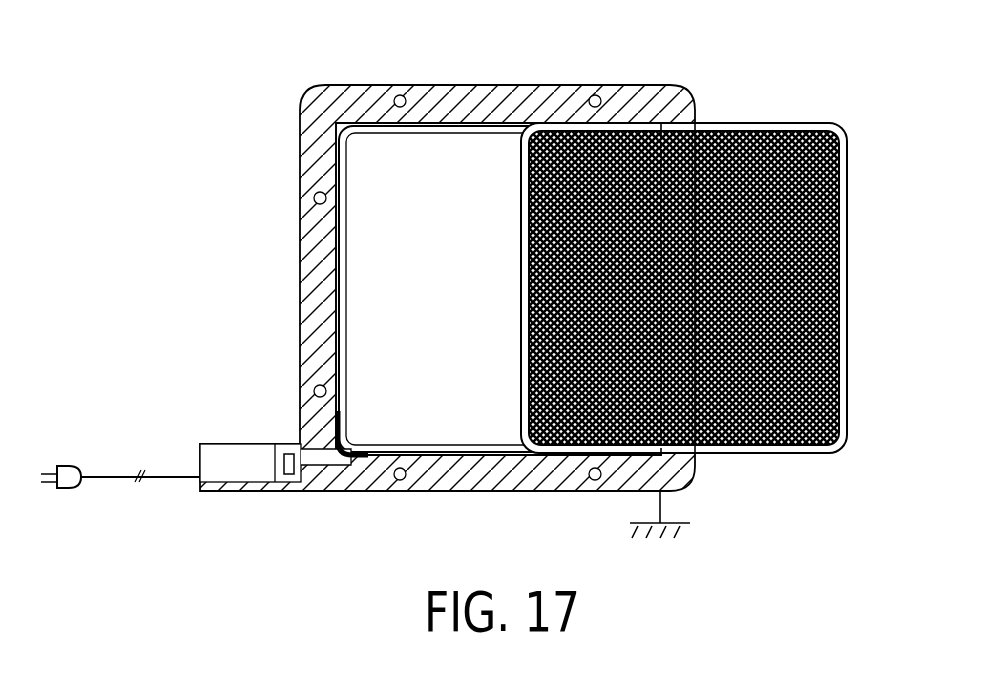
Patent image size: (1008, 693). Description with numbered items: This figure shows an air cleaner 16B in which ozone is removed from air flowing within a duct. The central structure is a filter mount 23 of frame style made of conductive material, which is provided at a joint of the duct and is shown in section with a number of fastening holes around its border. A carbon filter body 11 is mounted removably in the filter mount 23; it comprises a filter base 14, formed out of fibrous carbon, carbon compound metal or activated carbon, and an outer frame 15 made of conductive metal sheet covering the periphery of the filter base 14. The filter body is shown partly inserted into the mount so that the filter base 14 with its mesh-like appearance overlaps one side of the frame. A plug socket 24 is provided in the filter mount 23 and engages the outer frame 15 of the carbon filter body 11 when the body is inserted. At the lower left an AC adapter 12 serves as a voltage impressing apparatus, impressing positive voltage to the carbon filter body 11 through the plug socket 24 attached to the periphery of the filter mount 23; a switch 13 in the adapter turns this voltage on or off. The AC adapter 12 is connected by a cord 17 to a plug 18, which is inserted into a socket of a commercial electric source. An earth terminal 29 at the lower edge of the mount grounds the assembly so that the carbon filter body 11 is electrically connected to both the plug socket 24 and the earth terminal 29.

The air cleaner 16B is at (186, 158).
The filter mount 23 is at (525, 78).
The carbon filter body 11 is at (727, 241).
The outer frame 15 is at (840, 213).
The filter base 14 is at (835, 285).
The AC adapter 12 is at (213, 447).
The switch 13 is at (280, 466).
The cord 17 is at (145, 472).
The plug 18 is at (60, 460).
The plug socket 24 is at (345, 417).
The earth terminal 29 is at (682, 470).